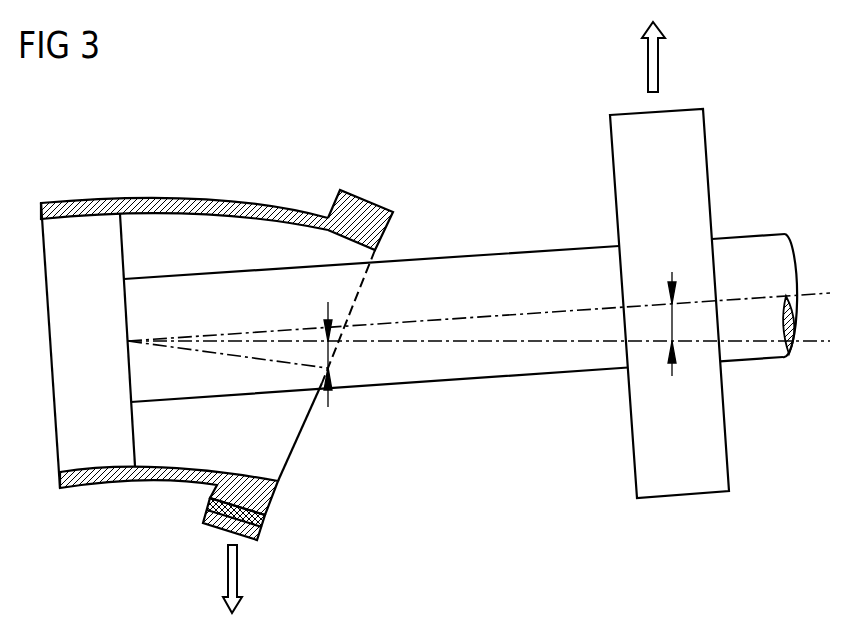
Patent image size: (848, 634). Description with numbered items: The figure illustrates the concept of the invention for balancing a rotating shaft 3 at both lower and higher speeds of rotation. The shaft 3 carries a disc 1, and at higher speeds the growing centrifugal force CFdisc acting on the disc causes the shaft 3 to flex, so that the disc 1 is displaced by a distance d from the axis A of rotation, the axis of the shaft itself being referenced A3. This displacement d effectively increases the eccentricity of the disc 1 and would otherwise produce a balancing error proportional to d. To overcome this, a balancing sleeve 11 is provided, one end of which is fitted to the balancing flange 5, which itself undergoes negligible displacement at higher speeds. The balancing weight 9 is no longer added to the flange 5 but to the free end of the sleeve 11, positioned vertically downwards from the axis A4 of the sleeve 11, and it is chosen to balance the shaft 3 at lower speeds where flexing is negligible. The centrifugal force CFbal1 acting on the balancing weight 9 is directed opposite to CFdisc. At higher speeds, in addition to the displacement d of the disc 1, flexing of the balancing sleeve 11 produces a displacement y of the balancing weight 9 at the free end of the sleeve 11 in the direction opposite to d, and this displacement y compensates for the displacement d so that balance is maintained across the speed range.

The disc 1 is at (614, 130).
The shaft 3 is at (444, 268).
The balancing flange 5 is at (55, 363).
The balancing weight 9 is at (262, 527).
The balancing sleeve 11 is at (261, 205).
The axis of rotation A is at (483, 342).
The axis of the shaft A3 is at (478, 317).
The axis of sleeve A4 is at (283, 357).
The displacement of the balancing weight y is at (332, 352).
The displacement of the disc d is at (673, 320).
The centrifugal force acting on the disc CFdisc is at (652, 58).
The centrifugal force acting on the balancing weight CFbal1 is at (232, 573).